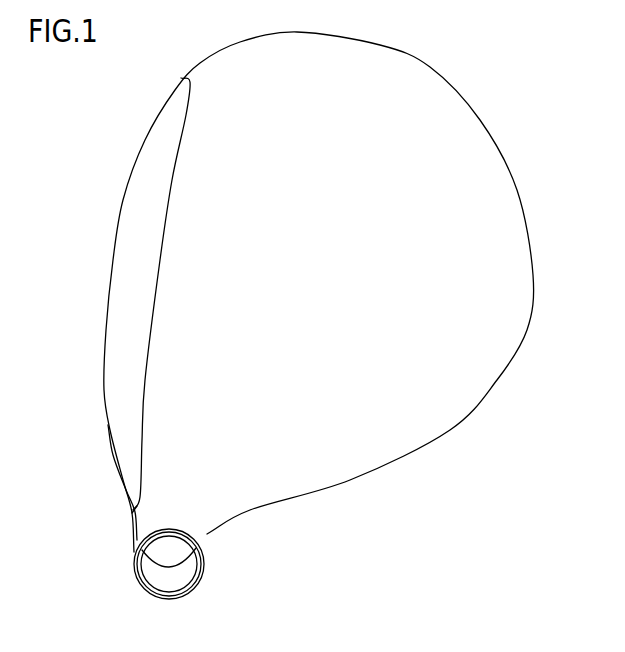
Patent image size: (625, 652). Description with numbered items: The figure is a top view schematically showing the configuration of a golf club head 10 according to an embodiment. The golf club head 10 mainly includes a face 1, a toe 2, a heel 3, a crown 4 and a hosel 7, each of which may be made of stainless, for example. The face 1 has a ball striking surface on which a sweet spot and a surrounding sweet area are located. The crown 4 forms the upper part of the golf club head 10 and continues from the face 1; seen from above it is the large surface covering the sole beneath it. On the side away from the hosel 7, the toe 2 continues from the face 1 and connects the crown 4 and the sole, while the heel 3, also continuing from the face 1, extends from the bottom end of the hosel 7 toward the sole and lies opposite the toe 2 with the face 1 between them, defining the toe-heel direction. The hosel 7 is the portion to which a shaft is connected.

The golf club head 10 is at (505, 96).
The face 1 is at (137, 262).
The toe 2 is at (183, 75).
The heel 3 is at (128, 508).
The crown 4 is at (378, 276).
The hosel 7 is at (204, 531).